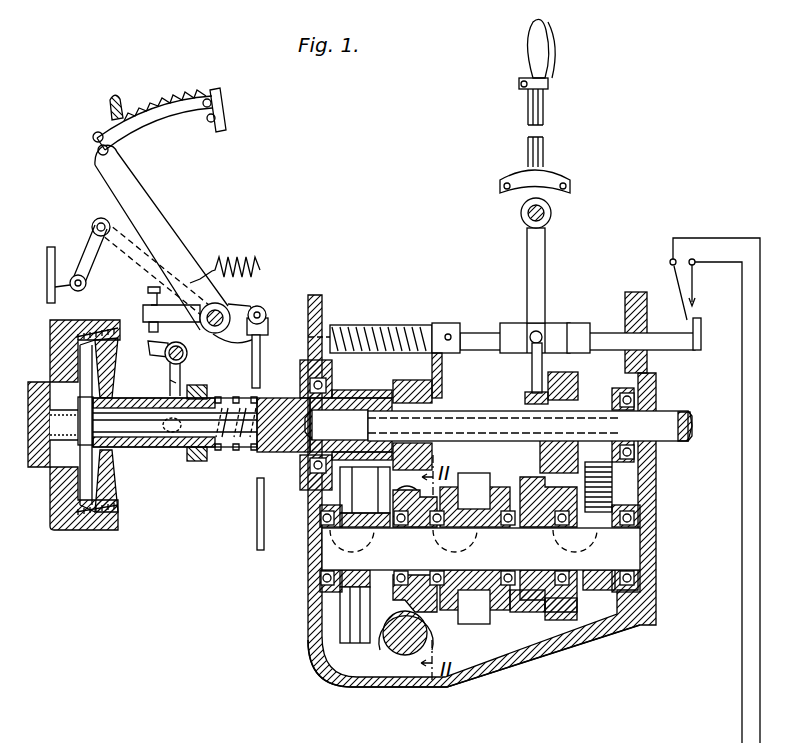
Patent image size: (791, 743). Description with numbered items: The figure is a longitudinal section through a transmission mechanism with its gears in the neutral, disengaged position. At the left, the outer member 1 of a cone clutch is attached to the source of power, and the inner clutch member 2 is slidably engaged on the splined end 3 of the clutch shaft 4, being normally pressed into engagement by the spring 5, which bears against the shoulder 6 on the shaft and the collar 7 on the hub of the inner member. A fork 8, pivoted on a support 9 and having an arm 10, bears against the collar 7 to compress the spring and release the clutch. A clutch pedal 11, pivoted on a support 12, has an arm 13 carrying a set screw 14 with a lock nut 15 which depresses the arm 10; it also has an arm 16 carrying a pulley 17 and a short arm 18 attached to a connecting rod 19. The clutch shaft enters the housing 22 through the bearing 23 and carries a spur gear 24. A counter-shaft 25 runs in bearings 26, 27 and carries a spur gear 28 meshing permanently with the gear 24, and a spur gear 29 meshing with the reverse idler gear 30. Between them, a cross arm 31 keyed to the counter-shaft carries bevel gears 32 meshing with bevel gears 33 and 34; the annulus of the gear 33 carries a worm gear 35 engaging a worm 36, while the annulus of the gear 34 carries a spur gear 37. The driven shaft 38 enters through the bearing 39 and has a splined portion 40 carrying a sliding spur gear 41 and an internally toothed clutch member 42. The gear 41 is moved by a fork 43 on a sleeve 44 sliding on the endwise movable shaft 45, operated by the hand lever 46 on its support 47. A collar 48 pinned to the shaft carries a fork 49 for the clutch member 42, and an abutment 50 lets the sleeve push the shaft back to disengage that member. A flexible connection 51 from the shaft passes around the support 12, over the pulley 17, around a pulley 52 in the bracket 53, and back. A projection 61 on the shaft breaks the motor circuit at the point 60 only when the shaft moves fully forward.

The outer member of cone clutch 1 is at (85, 515).
The inner clutch member 2 is at (108, 510).
The splined end 3 is at (140, 440).
The clutch shaft 4 is at (280, 446).
The spring 5 is at (235, 451).
The shoulder 6 is at (256, 452).
The collar 7 is at (207, 392).
The fork 8 is at (172, 389).
The support 9 is at (187, 357).
The arm 10 is at (153, 352).
The clutch pedal 11 is at (141, 223).
The support 12 is at (222, 307).
The arm 13 is at (158, 327).
The set screw 14 is at (110, 334).
The lock nut 15 is at (146, 305).
The arm 16 is at (140, 262).
The pulley 17 is at (94, 221).
The short arm 18 is at (259, 310).
The connecting rod 19 is at (259, 360).
The housing 22 is at (312, 505).
The bearing 23 is at (330, 392).
The spur gear 24 is at (371, 399).
The counter-shaft 25 is at (481, 549).
The bearing 26 is at (322, 583).
The bearing 27 is at (642, 581).
The spur gear 28 is at (352, 613).
The spur gear 29 is at (591, 590).
The reverse idler gear 30 is at (613, 484).
The cross arm 31 is at (467, 497).
The bevel gears 32 is at (503, 493).
The bevel gear 33 is at (440, 613).
The bevel gear 34 is at (506, 613).
The worm gear 35 is at (401, 487).
The worm 36 is at (401, 656).
The spur gear 37 is at (549, 618).
The sliding gear shaft 38 is at (658, 426).
The bearing 39 is at (640, 403).
The splined portion 40 is at (475, 412).
The spur gear 41 is at (568, 395).
The clutch member 42 is at (412, 414).
The fork 43 is at (532, 385).
The sleeve 44 is at (505, 323).
The shaft 45 is at (488, 350).
The hand lever 46 is at (546, 262).
The support 47 is at (552, 213).
The collar 48 is at (446, 323).
The fork 49 is at (447, 378).
The abutment 50 is at (576, 324).
The flexible connection 51 is at (241, 341).
The pulley 52 is at (98, 292).
The bracket 53 is at (48, 292).
The circuit breaking point 60 is at (715, 490).
The projection 61 is at (702, 327).